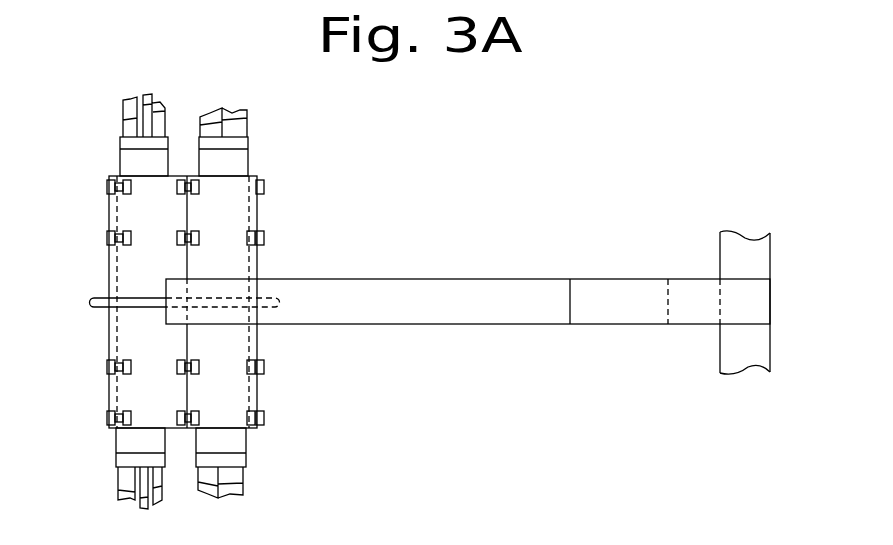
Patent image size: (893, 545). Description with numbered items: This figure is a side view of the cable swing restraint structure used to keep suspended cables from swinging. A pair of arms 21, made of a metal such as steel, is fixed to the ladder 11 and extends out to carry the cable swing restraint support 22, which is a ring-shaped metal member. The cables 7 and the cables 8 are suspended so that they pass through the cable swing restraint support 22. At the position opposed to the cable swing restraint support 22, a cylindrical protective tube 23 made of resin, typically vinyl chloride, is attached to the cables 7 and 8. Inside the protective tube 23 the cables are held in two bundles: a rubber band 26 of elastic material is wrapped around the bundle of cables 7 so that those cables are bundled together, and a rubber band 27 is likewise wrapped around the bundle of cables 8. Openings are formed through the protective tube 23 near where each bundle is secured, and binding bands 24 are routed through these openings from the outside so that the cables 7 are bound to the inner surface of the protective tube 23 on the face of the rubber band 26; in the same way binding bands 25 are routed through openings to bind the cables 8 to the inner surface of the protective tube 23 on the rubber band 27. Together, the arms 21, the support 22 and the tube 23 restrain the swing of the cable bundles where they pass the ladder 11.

The cables 7 is at (127, 127).
The cables 8 is at (242, 128).
The ladder 11 is at (731, 260).
The arms 21 is at (475, 280).
The cable swing restraint support 22 is at (102, 305).
The protective tube 23 is at (243, 217).
The binding bands 24 is at (110, 188).
The binding bands 25 is at (258, 188).
The rubber band 26 is at (123, 162).
The rubber band 27 is at (243, 162).